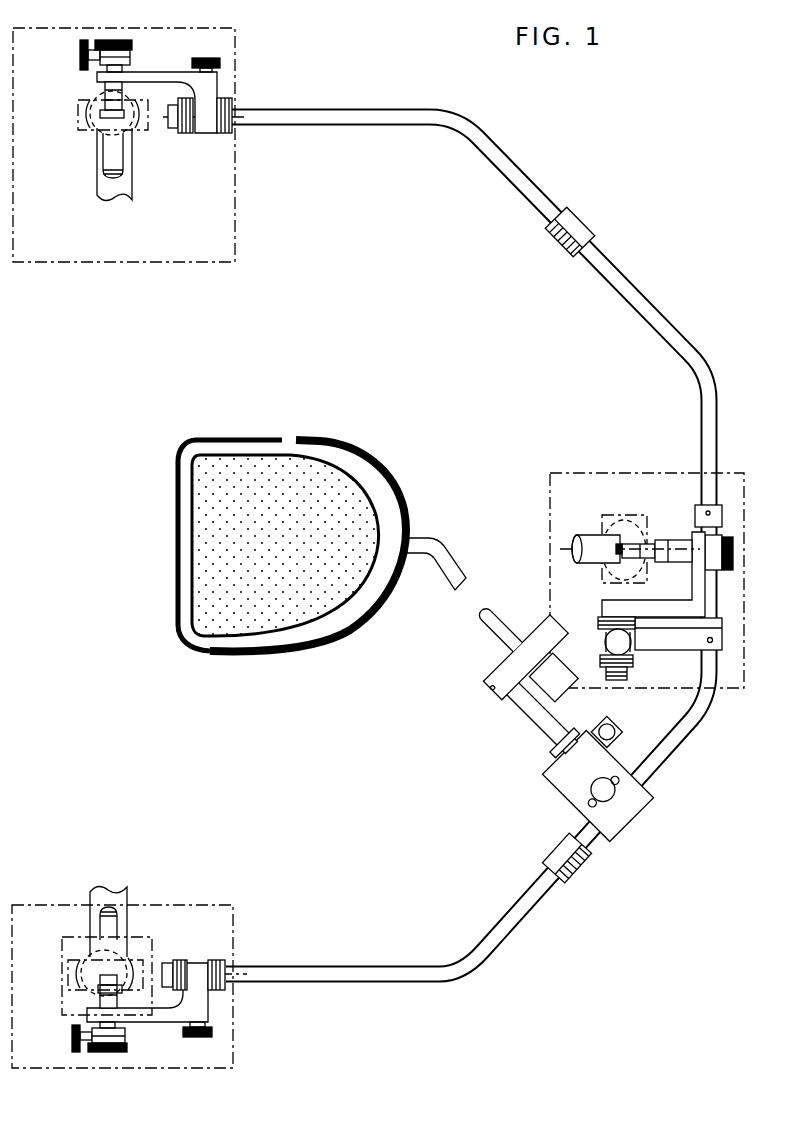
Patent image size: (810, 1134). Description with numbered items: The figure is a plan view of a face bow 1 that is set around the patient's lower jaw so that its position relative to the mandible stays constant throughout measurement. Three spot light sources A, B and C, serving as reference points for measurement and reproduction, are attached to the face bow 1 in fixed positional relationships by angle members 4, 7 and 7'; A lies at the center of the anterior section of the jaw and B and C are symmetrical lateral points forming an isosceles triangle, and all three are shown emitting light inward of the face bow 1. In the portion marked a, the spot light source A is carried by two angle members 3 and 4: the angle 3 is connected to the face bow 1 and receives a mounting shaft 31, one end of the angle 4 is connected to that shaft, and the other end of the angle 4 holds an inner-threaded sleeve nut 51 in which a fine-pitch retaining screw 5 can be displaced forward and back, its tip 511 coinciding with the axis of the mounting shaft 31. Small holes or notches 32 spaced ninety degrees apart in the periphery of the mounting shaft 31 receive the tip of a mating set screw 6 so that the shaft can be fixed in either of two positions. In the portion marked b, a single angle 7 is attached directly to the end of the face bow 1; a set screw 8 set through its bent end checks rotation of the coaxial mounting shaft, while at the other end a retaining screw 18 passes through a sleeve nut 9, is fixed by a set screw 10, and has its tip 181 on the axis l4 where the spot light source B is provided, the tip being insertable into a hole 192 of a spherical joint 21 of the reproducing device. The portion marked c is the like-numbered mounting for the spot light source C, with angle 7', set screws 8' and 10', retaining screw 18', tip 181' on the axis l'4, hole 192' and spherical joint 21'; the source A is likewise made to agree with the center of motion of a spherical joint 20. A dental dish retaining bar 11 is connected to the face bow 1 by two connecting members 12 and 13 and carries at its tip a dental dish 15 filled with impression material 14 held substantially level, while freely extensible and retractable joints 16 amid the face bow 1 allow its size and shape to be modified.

The face bow 1 is at (535, 194).
The angle member 3 is at (683, 651).
The angle member 4 is at (658, 612).
The retaining screw 5 is at (643, 542).
The set screw 6 is at (631, 650).
The angle member 7 is at (156, 1030).
The set screw 8 is at (202, 1061).
The sleeve nut 9 is at (125, 1038).
The set screw 10 is at (53, 1039).
The dental dish retaining bar 11 is at (484, 626).
The connecting member 12 is at (572, 795).
The connecting member 13 is at (490, 680).
The impression material 14 is at (207, 603).
The dental dish 15 is at (234, 656).
The extensible and retractable joints 16 is at (578, 222).
The retaining screw 18 is at (66, 1000).
The spherical joint 20 is at (605, 568).
The spherical joint 21 is at (83, 976).
The mounting shaft 31 is at (608, 612).
The small holes (notches) 32 is at (608, 632).
The sleeve nut 51 is at (681, 538).
The tip of retaining screw 181 is at (71, 927).
The hole 192 is at (67, 982).
The tip of retaining screw 511 is at (613, 545).
The angle member 7' is at (164, 81).
The set screw 8' is at (231, 51).
The set screw 10' is at (73, 58).
The retaining screw 18' is at (68, 94).
The spherical joint 21' is at (81, 113).
The tip of retaining screw 181' is at (72, 160).
The hole 192' is at (68, 137).
The spot light source A is at (576, 548).
The spot light source B is at (108, 970).
The spot light source C is at (116, 121).
The detail a is at (604, 472).
The detail b is at (235, 998).
The detail c is at (237, 235).
The axis of mounting shaft l4 is at (237, 968).
The axis of mounting shaft l'4 is at (216, 155).